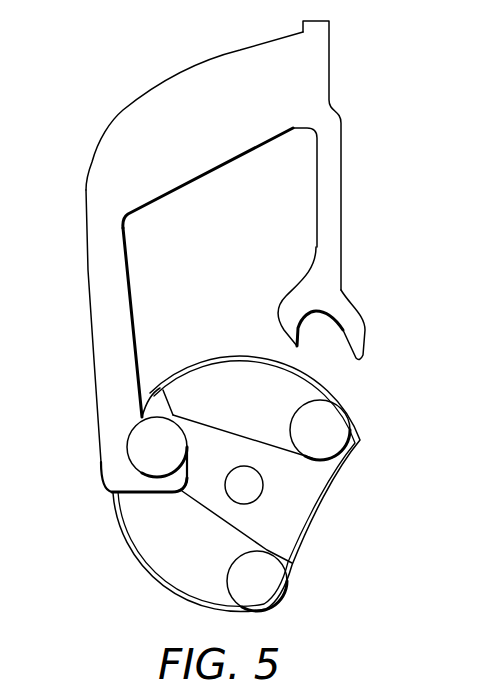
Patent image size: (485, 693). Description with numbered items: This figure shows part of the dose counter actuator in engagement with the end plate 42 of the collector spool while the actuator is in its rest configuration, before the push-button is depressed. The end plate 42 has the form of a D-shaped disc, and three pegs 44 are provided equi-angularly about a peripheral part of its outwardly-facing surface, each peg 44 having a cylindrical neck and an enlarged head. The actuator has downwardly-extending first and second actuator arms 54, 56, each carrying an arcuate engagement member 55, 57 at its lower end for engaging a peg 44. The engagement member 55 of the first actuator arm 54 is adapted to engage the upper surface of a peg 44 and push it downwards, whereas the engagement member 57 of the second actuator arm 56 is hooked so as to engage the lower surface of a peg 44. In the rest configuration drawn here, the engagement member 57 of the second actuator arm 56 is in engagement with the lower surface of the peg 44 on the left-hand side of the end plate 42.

The end plate 42 is at (175, 577).
The pegs 44 is at (132, 446).
The first actuator arm 54 is at (341, 181).
The engagement member 55 is at (342, 306).
The second actuator arm 56 is at (88, 333).
The engagement member 57 is at (125, 512).